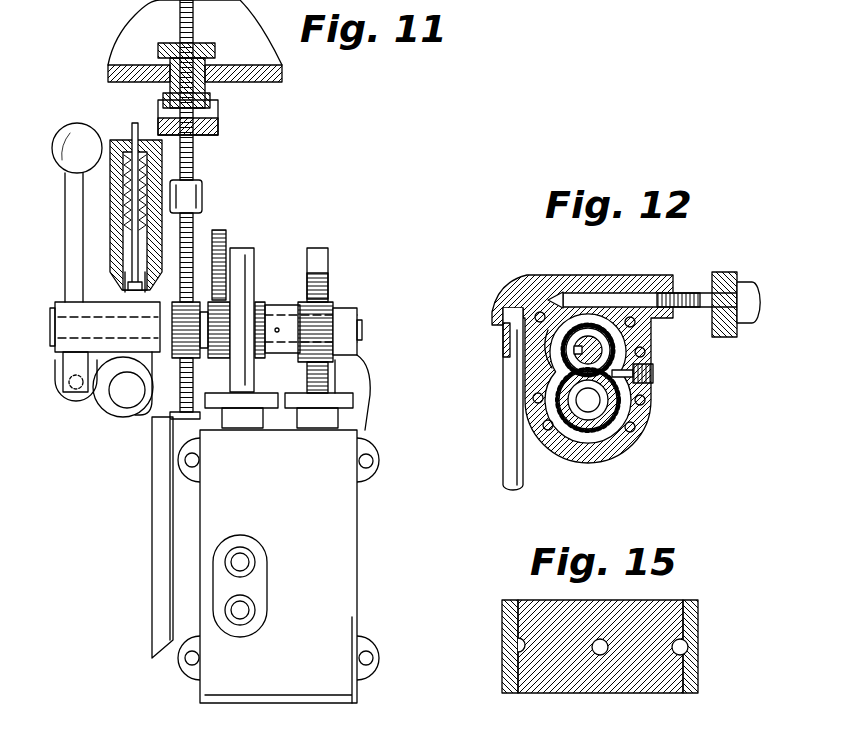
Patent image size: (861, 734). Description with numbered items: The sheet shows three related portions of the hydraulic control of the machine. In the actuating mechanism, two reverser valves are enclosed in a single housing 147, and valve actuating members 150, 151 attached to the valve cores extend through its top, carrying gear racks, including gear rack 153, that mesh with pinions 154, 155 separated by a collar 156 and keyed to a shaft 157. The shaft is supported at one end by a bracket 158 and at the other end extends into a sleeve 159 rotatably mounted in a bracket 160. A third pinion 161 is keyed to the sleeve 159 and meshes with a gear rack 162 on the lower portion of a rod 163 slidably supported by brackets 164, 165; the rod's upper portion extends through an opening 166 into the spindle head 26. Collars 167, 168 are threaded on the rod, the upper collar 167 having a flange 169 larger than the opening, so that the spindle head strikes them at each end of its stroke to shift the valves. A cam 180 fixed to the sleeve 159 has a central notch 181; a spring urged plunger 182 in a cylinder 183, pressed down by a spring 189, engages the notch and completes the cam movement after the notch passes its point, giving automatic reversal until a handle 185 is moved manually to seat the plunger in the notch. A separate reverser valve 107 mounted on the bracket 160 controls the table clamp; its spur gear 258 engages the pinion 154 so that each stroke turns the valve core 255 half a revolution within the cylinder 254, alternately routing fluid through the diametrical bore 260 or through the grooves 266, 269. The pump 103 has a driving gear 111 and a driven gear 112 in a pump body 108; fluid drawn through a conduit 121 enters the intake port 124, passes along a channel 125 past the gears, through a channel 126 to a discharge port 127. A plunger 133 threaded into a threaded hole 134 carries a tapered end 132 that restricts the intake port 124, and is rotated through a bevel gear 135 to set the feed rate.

In FIG. 11, the spindle head 26 is at (108, 72).
In FIG. 12, the pump 103 is at (680, 378).
In FIG. 11, the reverser valve 107 is at (212, 206).
In FIG. 15, the reverser valve 107 is at (490, 673).
In FIG. 12, the pump body 108 is at (656, 327).
In FIG. 12, the driving gear 111 is at (646, 340).
In FIG. 12, the driven gear 112 is at (595, 417).
In FIG. 12, the conduit 121 is at (513, 452).
In FIG. 12, the intake port 124 is at (537, 300).
In FIG. 12, the channel 125 is at (525, 350).
In FIG. 12, the channel 126 is at (650, 363).
In FIG. 12, the discharge port 127 is at (655, 378).
In FIG. 12, the tapered end 132 is at (557, 300).
In FIG. 12, the plunger 133 is at (600, 300).
In FIG. 12, the threaded hole 134 is at (675, 300).
In FIG. 12, the bevel gear 135 is at (750, 287).
In FIG. 11, the valve housing 147 is at (348, 523).
In FIG. 11, the valve actuating member 150 is at (248, 258).
In FIG. 11, the valve actuating member 151 is at (316, 258).
In FIG. 11, the gear rack 153 is at (323, 288).
In FIG. 11, the pinion 154 is at (219, 360).
In FIG. 11, the pinion 155 is at (323, 316).
In FIG. 11, the collar 156 is at (273, 355).
In FIG. 11, the shaft 157 is at (361, 327).
In FIG. 11, the bracket 158 is at (348, 375).
In FIG. 11, the sleeve 159 is at (130, 350).
In FIG. 11, the bracket 160 is at (143, 418).
In FIG. 11, the third pinion 161 is at (172, 327).
In FIG. 11, the gear rack 162 is at (134, 288).
In FIG. 11, the rod 163 is at (196, 6).
In FIG. 11, the bracket 164 is at (194, 190).
In FIG. 11, the bracket 165 is at (186, 418).
In FIG. 11, the opening 166 is at (245, 60).
In FIG. 11, the upper collar 167 is at (207, 58).
In FIG. 11, the lower collar 168 is at (218, 127).
In FIG. 11, the flange 169 is at (158, 46).
In FIG. 11, the cam 180 is at (132, 292).
In FIG. 11, the notch 181 is at (128, 278).
In FIG. 11, the plunger 182 is at (122, 140).
In FIG. 11, the cylinder 183 is at (112, 202).
In FIG. 11, the handle 185 is at (70, 144).
In FIG. 11, the spring 189 is at (131, 126).
In FIG. 11, the cylinder 254 is at (196, 180).
In FIG. 15, the cylinder 254 is at (692, 628).
In FIG. 15, the valve core 255 is at (555, 610).
In FIG. 11, the spur gear 258 is at (226, 231).
In FIG. 15, the diametrical bore 260 is at (602, 638).
In FIG. 15, the groove 266 is at (516, 642).
In FIG. 15, the groove 269 is at (680, 648).